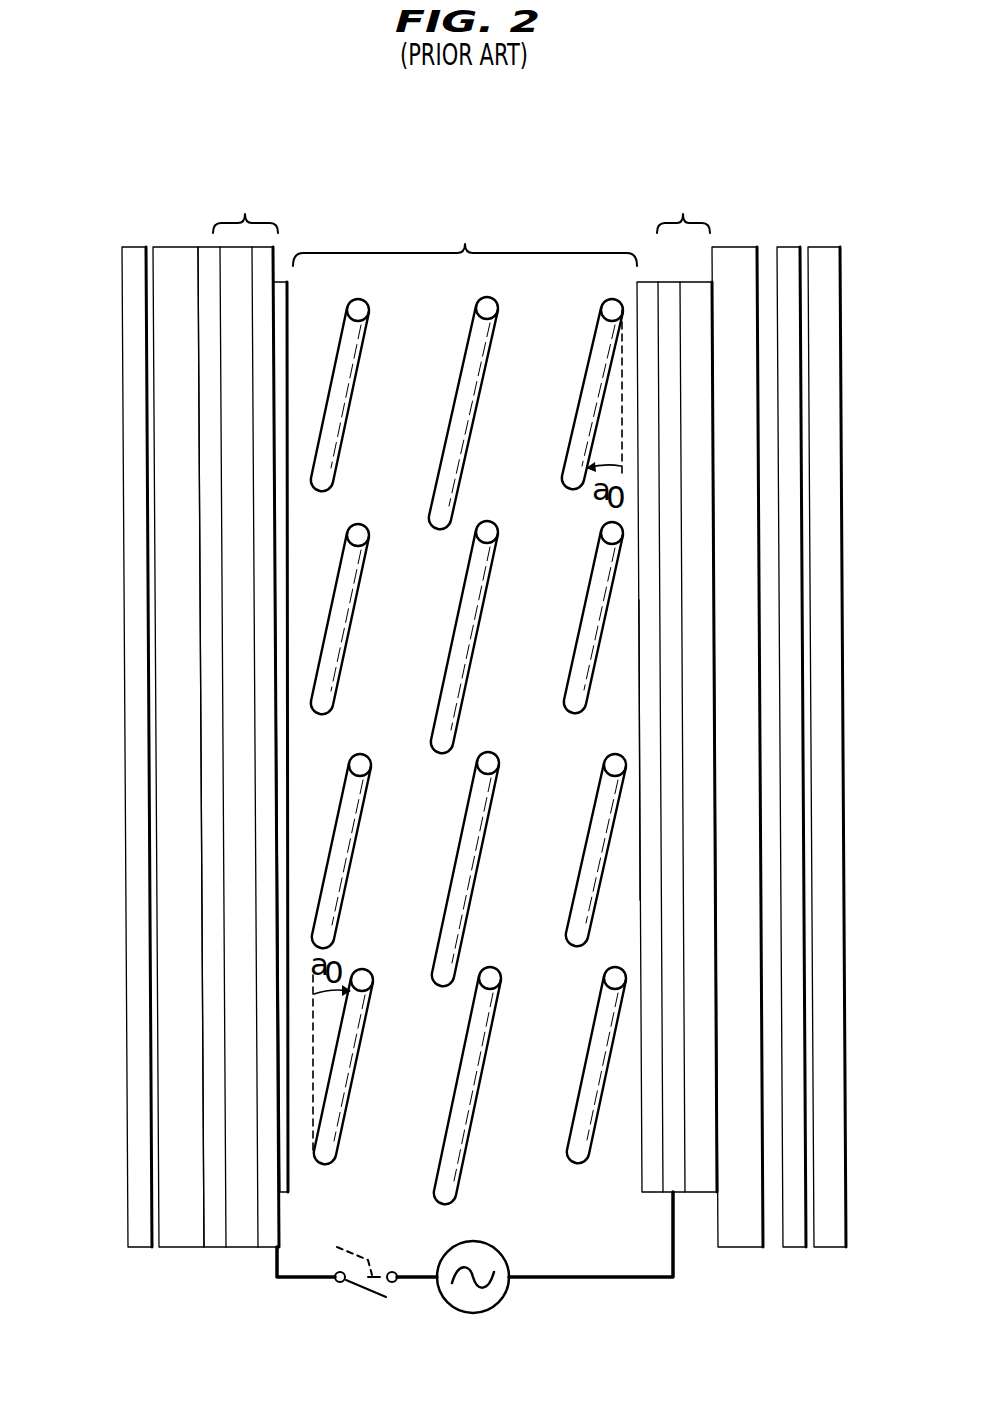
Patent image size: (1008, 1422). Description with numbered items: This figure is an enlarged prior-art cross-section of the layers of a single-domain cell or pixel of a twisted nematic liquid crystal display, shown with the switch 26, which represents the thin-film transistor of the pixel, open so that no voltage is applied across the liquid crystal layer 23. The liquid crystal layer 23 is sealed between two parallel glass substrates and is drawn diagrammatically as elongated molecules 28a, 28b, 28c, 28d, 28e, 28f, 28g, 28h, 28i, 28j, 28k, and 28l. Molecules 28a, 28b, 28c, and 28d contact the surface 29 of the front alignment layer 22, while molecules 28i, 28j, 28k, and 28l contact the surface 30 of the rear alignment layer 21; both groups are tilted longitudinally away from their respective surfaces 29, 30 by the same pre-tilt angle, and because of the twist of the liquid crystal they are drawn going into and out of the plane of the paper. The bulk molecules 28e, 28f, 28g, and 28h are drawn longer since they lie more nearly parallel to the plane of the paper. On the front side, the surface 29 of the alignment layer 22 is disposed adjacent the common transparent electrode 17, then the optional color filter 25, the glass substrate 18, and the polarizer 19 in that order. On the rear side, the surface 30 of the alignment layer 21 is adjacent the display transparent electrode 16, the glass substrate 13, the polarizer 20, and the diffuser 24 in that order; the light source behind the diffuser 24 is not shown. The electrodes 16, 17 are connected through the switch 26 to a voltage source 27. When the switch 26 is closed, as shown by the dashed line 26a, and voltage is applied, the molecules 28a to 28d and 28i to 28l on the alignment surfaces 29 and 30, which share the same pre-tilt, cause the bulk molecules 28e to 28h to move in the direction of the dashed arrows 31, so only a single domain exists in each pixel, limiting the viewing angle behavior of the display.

The glass substrate 13 is at (737, 1248).
The display transparent electrode 16 is at (683, 204).
The common transparent electrode 17 is at (245, 204).
The glass substrate 18 is at (172, 1248).
The polarizer 19 is at (130, 1248).
The polarizer 20 is at (790, 1248).
The alignment layer 21 is at (640, 1192).
The alignment layer 22 is at (290, 1192).
The liquid crystal layer 23 is at (465, 236).
The diffuser 24 is at (827, 1248).
The color filter 25 is at (212, 1248).
The switch 26 is at (354, 1290).
The dashed line 26a is at (333, 1248).
The AC power source 27 is at (508, 1292).
The elongated molecule 28a is at (357, 1065).
The elongated molecule 28b is at (355, 863).
The elongated molecule 28c is at (352, 657).
The elongated molecule 28d is at (366, 350).
The elongated molecule 28e is at (497, 350).
The elongated molecule 28f is at (493, 585).
The elongated molecule 28g is at (493, 830).
The elongated molecule 28h is at (495, 1010).
The elongated molecule 28i is at (580, 1100).
The elongated molecule 28j is at (582, 856).
The elongated molecule 28k is at (580, 625).
The elongated molecule 28l is at (578, 428).
The surface 29 is at (290, 748).
The surface 30 is at (638, 720).
The dashed arrows 31 is at (410, 491).